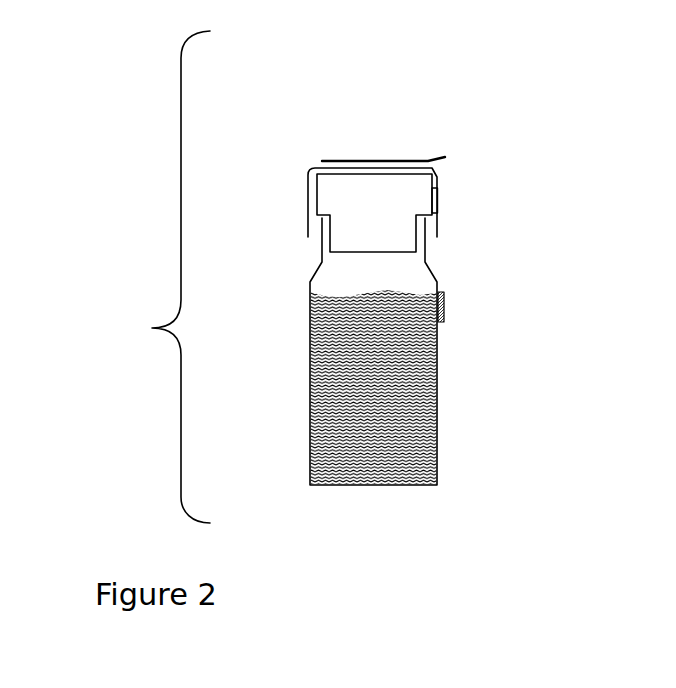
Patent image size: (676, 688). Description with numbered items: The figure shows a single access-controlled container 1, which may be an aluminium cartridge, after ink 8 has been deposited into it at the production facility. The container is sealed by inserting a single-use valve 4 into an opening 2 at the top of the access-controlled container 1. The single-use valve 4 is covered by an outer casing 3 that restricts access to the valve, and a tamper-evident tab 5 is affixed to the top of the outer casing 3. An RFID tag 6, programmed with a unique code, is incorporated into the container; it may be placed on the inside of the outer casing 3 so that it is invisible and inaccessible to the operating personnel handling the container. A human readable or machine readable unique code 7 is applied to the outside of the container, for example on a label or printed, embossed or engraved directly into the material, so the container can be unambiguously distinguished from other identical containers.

The access-controlled container 1 is at (140, 330).
The opening 2 is at (308, 288).
The outer casing 3 is at (307, 202).
The single-use valve 4 is at (345, 195).
The tamper-evident tab 5 is at (348, 158).
The RFID tag 6 is at (438, 202).
The unique code 7 is at (446, 308).
The ink 8 is at (387, 377).